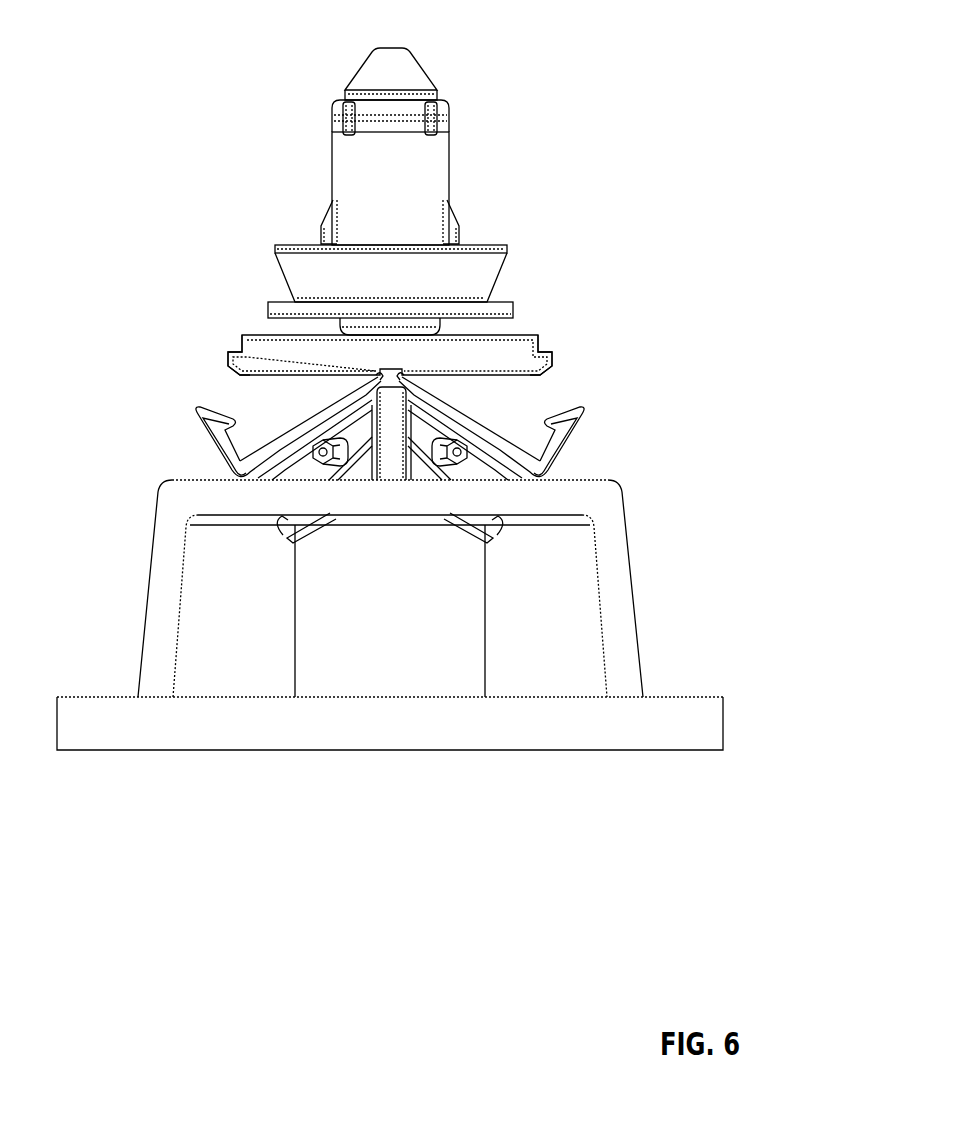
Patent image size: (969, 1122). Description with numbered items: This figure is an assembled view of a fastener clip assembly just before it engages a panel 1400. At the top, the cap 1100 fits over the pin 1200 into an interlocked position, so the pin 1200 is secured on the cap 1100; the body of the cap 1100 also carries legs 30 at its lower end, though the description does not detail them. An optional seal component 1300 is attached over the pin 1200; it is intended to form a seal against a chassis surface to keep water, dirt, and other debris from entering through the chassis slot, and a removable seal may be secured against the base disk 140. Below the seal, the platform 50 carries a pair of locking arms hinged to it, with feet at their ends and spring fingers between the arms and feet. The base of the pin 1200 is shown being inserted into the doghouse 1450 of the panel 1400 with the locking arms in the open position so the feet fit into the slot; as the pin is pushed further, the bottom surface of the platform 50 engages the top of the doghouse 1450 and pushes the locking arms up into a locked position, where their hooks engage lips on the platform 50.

The pin 1200 is at (404, 75).
The cap 1100 is at (404, 167).
The legs 30 is at (397, 240).
The seal component 1300 is at (302, 285).
The base disk 140 is at (495, 308).
The platform 50 is at (320, 355).
The doghouse 1450 is at (620, 587).
The panel 1400 is at (675, 718).